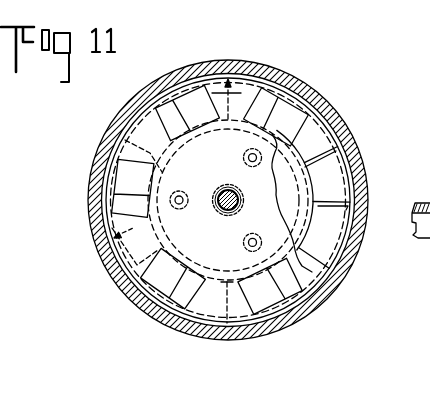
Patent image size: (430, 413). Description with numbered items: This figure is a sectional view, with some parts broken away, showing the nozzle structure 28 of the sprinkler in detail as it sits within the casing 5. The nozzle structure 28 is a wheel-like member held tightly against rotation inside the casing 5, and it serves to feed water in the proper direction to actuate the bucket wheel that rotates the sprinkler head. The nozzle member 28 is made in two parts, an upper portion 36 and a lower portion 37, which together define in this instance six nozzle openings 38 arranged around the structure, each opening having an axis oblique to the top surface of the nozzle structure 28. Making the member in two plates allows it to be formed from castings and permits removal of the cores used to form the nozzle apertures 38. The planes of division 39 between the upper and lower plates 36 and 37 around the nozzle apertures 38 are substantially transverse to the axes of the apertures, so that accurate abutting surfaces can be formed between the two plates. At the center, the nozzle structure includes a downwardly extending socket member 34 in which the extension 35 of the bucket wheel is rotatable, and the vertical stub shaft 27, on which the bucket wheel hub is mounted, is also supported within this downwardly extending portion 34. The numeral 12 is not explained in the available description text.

The casing 5 is at (92, 183).
The magnet position 12 is at (187, 201).
The vertical stub shaft 27 is at (226, 189).
The nozzle structure 28 is at (133, 133).
The socket member 34 is at (224, 221).
The extension 35 is at (217, 213).
The upper portion 36 is at (247, 84).
The lower portion 37 is at (296, 182).
The nozzle openings 38 is at (192, 100).
The planes of division 39 is at (386, 196).